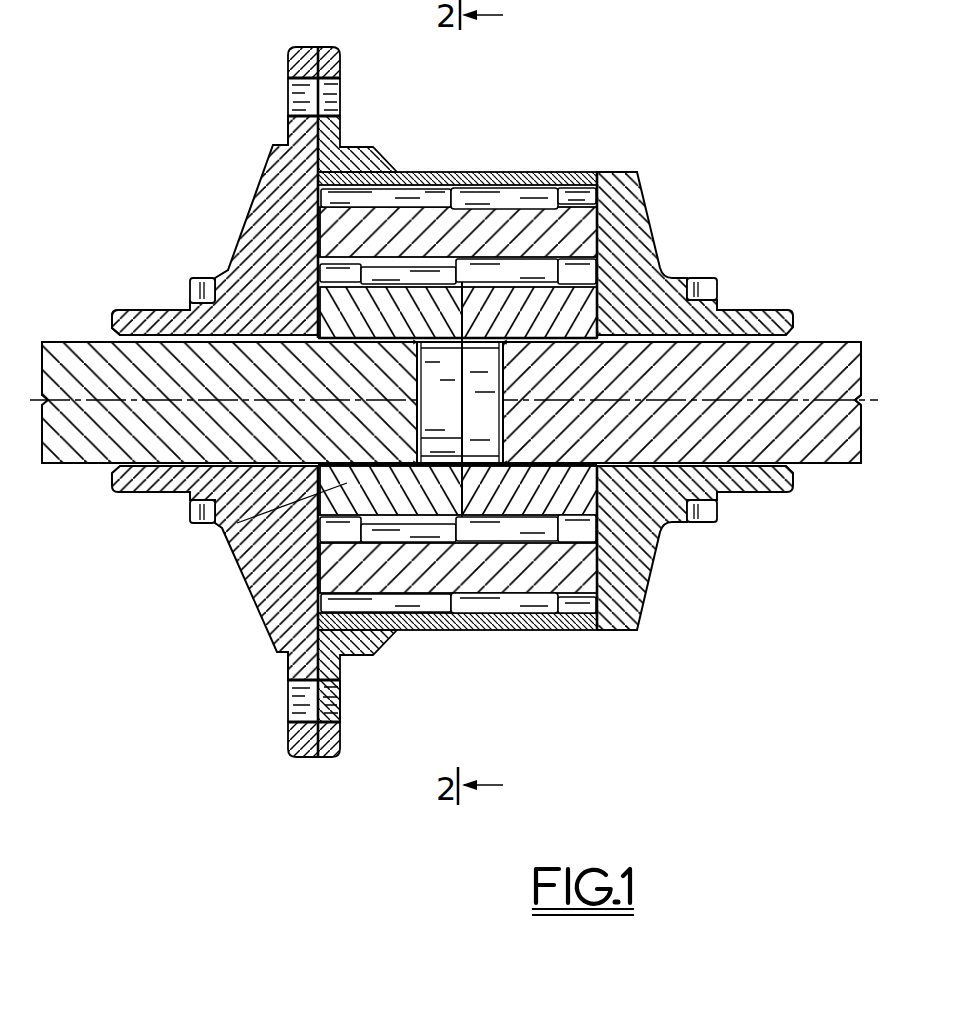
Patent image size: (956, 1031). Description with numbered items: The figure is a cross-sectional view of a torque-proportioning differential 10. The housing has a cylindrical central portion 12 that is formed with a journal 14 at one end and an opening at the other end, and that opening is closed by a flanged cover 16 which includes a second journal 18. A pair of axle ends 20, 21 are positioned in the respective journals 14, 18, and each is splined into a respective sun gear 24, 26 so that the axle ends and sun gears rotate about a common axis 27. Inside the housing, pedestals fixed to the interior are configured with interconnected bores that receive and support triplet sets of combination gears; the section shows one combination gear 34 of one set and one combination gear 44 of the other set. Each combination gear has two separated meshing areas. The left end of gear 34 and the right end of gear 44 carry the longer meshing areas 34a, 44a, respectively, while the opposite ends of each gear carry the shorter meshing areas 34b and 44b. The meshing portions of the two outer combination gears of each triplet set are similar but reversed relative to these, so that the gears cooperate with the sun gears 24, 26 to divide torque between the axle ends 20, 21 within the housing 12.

The differential 10 is at (546, 92).
The cylindrical central portion 12 is at (478, 172).
The journal 14 is at (727, 317).
The flanged cover 16 is at (215, 225).
The second journal 18 is at (187, 320).
The axle end 20 is at (805, 427).
The axle end 21 is at (85, 423).
The sun gear 24 is at (662, 540).
The sun gear 26 is at (232, 530).
The common axis 27 is at (867, 399).
The combination gear 34 is at (511, 196).
The longer meshing area 34a is at (408, 195).
The shorter meshing area 34b is at (578, 193).
The combination gear 44 is at (397, 604).
The longer meshing area 44a is at (522, 605).
The shorter meshing area 44b is at (362, 650).